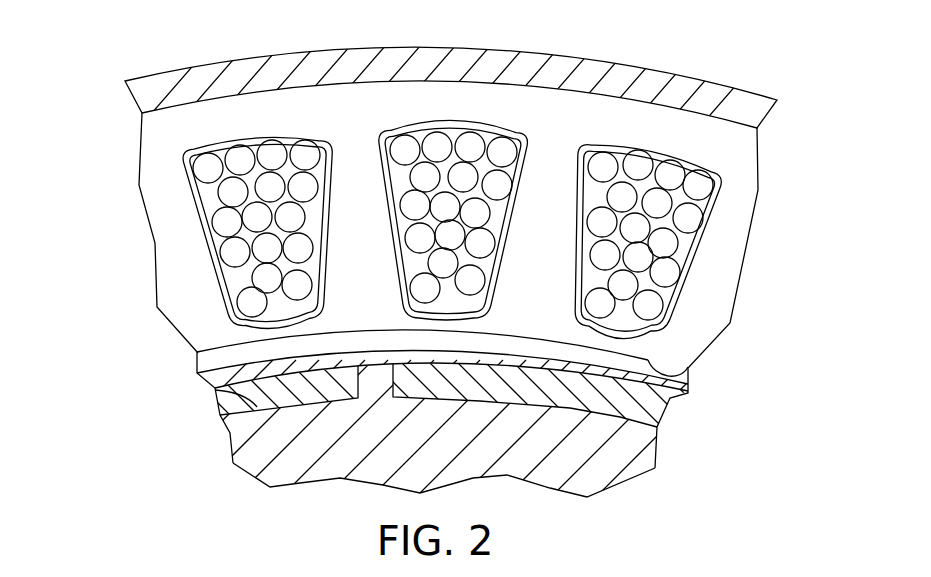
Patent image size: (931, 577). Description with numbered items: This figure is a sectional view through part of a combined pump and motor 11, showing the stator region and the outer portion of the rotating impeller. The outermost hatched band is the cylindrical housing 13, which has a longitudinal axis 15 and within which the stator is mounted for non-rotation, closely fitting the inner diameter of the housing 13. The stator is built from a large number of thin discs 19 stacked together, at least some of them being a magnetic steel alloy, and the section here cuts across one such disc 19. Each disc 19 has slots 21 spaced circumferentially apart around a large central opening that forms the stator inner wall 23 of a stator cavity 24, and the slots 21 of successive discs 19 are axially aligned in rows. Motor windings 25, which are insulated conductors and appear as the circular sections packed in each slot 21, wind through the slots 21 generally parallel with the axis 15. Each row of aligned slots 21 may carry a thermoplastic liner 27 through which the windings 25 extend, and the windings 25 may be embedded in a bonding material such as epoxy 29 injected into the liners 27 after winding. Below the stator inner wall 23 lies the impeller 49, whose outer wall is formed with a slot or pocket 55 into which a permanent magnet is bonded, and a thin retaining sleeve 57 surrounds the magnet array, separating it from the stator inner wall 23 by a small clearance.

The combined pump and motor 11 is at (700, 67).
The cylindrical housing 13 is at (520, 63).
The longitudinal axis 15 is at (150, 162).
The stator disc 19 is at (173, 245).
The slot 21 is at (707, 240).
The stator inner wall 23 is at (687, 378).
The stator cavity 24 is at (220, 357).
The motor winding 25 is at (690, 218).
The thermoplastic liner 27 is at (672, 332).
The epoxy 29 is at (235, 276).
The impeller 49 is at (620, 447).
The pocket 55 is at (235, 397).
The retaining sleeve 57 is at (673, 398).